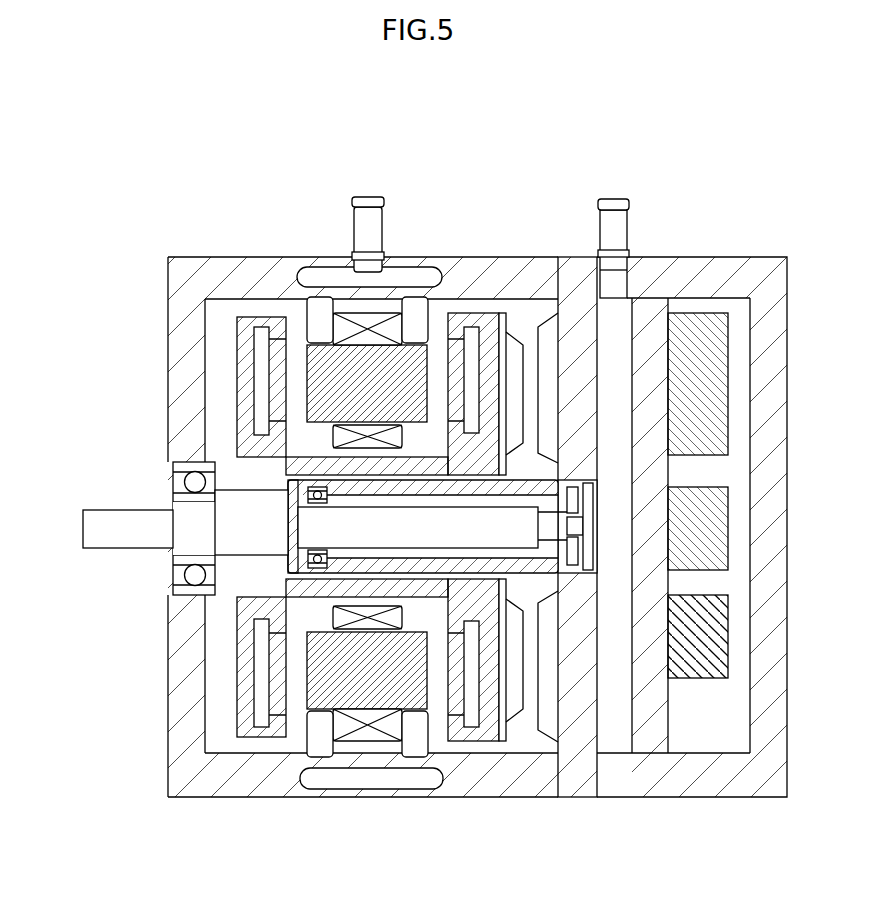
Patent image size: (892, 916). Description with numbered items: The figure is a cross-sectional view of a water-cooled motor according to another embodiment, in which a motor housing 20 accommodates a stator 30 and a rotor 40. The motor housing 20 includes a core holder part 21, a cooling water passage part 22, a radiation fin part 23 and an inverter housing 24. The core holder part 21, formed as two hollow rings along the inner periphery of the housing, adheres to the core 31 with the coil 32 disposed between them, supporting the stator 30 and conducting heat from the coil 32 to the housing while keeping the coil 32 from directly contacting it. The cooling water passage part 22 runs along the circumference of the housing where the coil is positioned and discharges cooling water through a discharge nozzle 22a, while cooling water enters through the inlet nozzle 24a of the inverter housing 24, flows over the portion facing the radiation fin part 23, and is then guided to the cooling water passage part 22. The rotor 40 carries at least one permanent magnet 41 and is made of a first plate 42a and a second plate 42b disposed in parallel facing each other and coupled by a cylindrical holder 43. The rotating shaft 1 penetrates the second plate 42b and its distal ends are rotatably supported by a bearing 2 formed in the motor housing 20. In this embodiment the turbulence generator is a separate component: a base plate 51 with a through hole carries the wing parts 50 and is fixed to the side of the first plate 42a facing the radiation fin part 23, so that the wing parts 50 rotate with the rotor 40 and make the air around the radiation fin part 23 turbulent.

The rotating shaft 1 is at (87, 527).
The bearing 2 is at (190, 575).
The motor housing 20 is at (231, 268).
The core holder part 21 is at (322, 317).
The cooling water passage part 22 is at (413, 275).
The discharge nozzle 22a is at (367, 222).
The radiation fin part 23 is at (555, 325).
The inverter housing 24 is at (720, 265).
The inlet nozzle 24a is at (618, 223).
The stator 30 is at (252, 527).
The core 31 is at (317, 372).
The coil 32 is at (345, 435).
The rotor 40 is at (342, 513).
The permanent magnet 41 is at (433, 337).
The first plate 42a is at (477, 728).
The second plate 42b is at (237, 608).
The cylindrical holder 43 is at (317, 595).
The wing part 50 is at (538, 725).
The base plate 51 is at (508, 697).